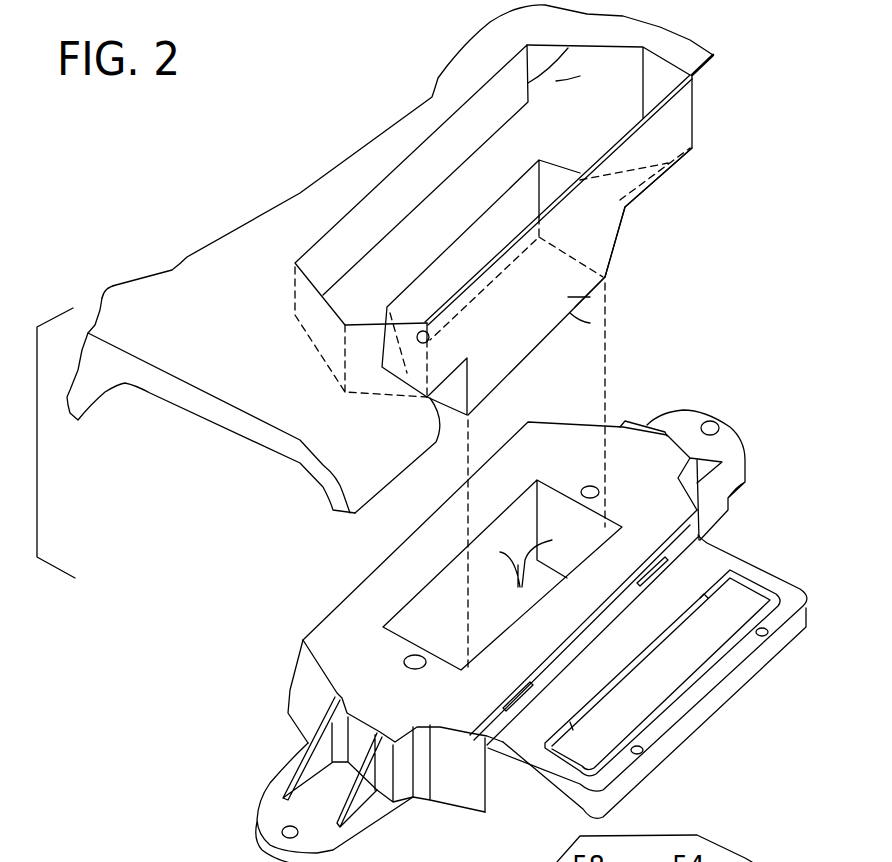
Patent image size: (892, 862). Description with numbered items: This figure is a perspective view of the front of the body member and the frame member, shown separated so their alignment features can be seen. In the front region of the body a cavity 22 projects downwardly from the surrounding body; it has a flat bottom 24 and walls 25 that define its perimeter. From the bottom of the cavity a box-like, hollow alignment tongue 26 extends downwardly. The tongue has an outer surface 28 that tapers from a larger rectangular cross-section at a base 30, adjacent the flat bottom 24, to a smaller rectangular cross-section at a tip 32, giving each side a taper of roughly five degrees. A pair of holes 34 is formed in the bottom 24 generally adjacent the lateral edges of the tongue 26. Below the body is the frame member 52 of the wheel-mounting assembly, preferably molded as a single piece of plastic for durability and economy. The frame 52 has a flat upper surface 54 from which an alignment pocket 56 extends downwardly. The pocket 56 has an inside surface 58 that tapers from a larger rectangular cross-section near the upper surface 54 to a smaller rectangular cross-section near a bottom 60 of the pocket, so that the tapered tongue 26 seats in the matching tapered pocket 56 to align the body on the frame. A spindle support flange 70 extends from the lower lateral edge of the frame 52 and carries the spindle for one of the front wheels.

The cavity 22 is at (606, 128).
The flat bottom 24 is at (549, 148).
The walls 25 is at (603, 35).
The alignment tongue 26 is at (620, 258).
The outer surface 28 is at (585, 303).
The base 30 is at (625, 208).
The tip 32 is at (578, 327).
The holes 34 is at (404, 632).
The frame member 52 is at (296, 656).
The flat upper surface 54 is at (669, 504).
The alignment pocket 56 is at (518, 520).
The inside surface 58 is at (526, 580).
The bottom 60 is at (457, 655).
The spindle support flange 70 is at (262, 800).